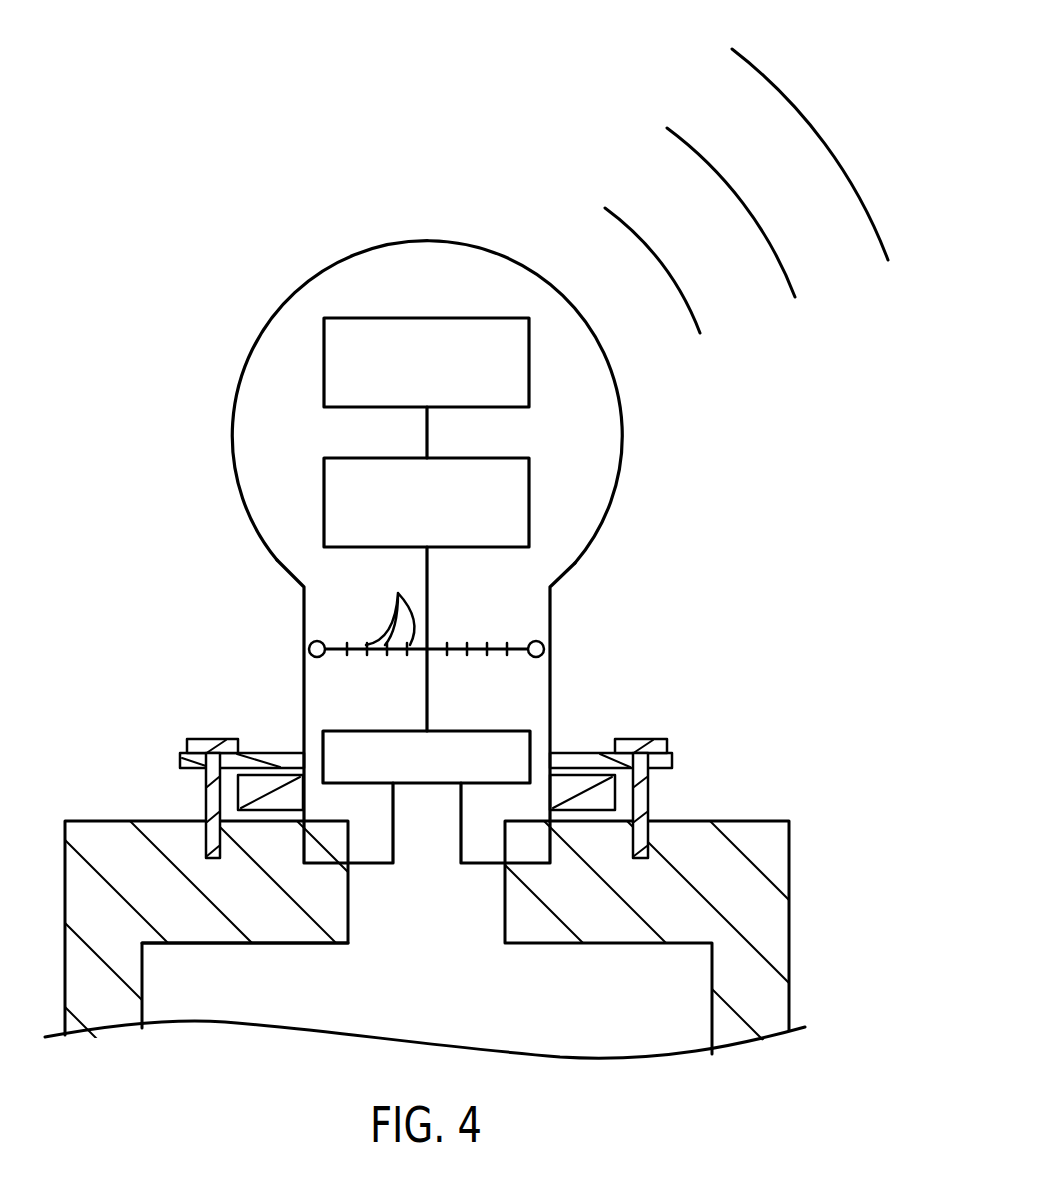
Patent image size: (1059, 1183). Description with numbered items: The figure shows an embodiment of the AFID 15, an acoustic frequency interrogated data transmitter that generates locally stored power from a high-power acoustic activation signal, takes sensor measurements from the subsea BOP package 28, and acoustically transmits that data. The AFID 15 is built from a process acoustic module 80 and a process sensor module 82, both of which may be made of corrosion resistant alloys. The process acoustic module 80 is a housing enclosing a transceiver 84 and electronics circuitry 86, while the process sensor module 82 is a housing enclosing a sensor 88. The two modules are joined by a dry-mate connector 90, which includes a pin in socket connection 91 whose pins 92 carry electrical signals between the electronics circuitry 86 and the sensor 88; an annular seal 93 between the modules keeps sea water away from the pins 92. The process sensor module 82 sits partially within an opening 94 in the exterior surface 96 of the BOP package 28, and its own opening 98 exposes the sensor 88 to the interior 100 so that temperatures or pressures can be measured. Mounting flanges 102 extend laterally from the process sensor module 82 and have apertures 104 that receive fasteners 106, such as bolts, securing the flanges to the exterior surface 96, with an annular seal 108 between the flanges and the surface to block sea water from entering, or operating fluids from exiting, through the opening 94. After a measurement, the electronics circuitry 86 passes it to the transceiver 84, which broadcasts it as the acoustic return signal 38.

The AFID 15 is at (463, 552).
The subsea BOP package 28 is at (420, 910).
The acoustic return signal 38 is at (838, 336).
The process acoustic module 80 is at (620, 403).
The process sensor module 82 is at (550, 697).
The transceiver 84 is at (530, 362).
The electronics circuitry 86 is at (530, 502).
The sensor 88 is at (466, 731).
The dry-mate connector 90 is at (400, 624).
The pin in socket connection 91 is at (488, 614).
The pins 92 is at (390, 607).
The annular seal 93 is at (541, 641).
The opening 94 is at (500, 923).
The exterior surface 96 is at (107, 820).
The opening 98 is at (423, 922).
The interior 100 is at (260, 996).
The mounting flanges 102 is at (278, 752).
The apertures 104 is at (427, 772).
The fasteners 106 is at (211, 800).
The annular seal 108 is at (280, 800).